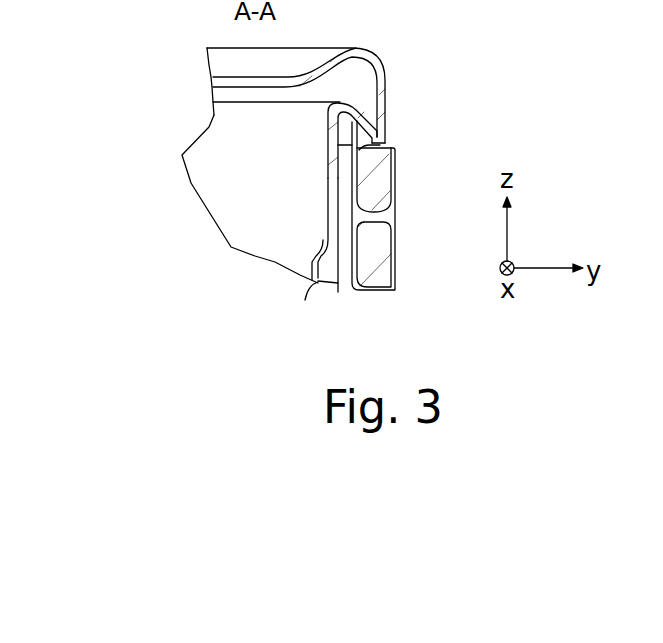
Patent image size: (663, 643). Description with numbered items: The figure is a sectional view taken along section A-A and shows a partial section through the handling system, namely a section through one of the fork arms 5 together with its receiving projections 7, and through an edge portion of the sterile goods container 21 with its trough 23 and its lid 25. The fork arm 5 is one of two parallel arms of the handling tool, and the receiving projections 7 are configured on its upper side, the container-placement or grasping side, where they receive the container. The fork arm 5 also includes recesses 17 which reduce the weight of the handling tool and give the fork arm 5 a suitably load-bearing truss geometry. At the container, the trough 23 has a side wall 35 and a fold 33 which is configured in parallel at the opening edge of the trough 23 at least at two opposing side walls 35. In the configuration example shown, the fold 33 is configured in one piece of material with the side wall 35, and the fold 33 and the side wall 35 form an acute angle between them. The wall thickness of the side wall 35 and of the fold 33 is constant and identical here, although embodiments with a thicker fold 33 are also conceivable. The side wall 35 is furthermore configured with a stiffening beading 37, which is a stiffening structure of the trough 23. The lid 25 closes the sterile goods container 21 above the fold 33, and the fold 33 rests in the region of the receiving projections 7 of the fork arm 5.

The sterile goods container 21 is at (142, 88).
The lid 25 is at (385, 58).
The fold 33 is at (349, 105).
The receiving projection 7 is at (382, 148).
The fork arm 5 is at (372, 182).
The recess 17 is at (393, 219).
The trough 23 is at (230, 216).
The side wall 35 is at (327, 178).
The stiffening beading 37 is at (318, 283).